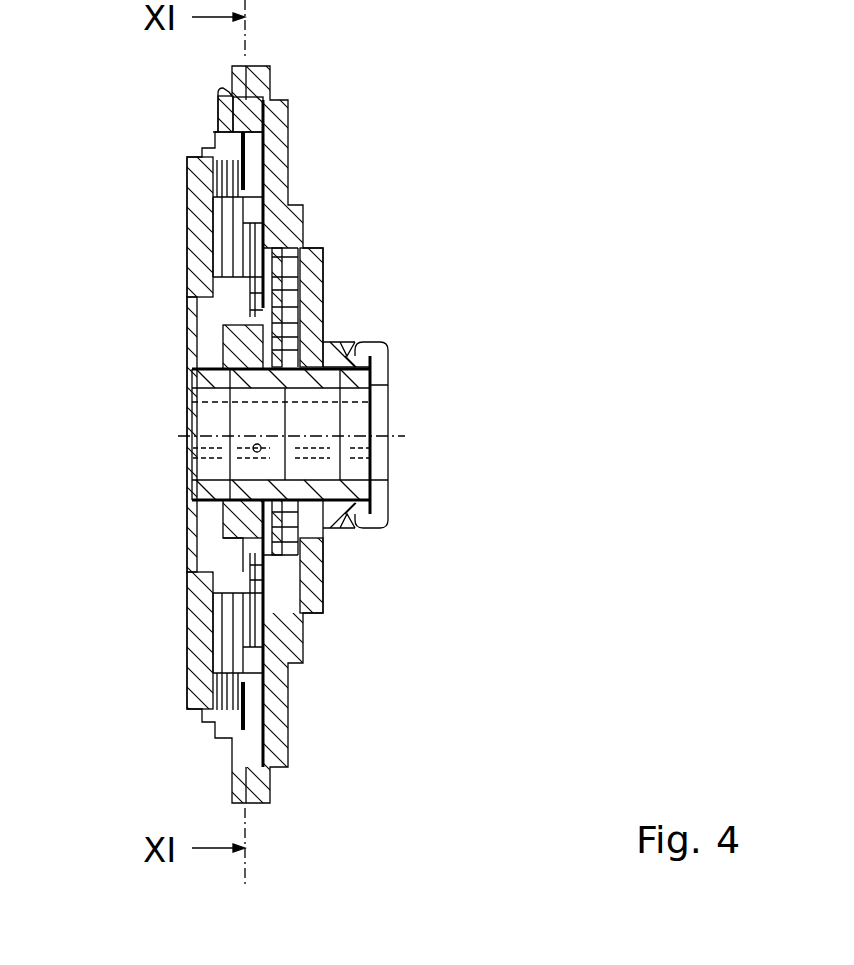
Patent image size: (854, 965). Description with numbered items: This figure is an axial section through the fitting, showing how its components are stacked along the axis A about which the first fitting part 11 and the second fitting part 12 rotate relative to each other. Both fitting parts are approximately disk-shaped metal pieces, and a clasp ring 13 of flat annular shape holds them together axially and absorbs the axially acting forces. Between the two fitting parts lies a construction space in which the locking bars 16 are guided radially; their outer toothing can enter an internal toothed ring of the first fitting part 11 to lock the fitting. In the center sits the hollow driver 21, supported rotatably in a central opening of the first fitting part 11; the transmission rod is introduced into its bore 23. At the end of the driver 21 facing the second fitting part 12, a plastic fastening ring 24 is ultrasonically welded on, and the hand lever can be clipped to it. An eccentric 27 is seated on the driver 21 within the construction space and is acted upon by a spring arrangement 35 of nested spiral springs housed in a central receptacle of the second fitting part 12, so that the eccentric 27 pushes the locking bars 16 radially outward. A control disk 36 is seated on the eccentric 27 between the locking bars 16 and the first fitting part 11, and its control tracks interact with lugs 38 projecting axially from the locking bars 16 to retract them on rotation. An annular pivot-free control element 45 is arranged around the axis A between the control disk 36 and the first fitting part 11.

The first fitting part 11 is at (185, 177).
The second fitting part 12 is at (288, 165).
The clasp ring 13 is at (222, 110).
The locking bar 16 is at (247, 263).
The driver 21 is at (210, 492).
The bore 23 is at (205, 460).
The fastening ring 24 is at (366, 521).
The eccentric 27 is at (248, 520).
The spring arrangement 35 is at (290, 333).
The control disk 36 is at (240, 279).
The lug 38 is at (243, 210).
The pivot-free control element 45 is at (223, 597).
The axis A is at (211, 435).